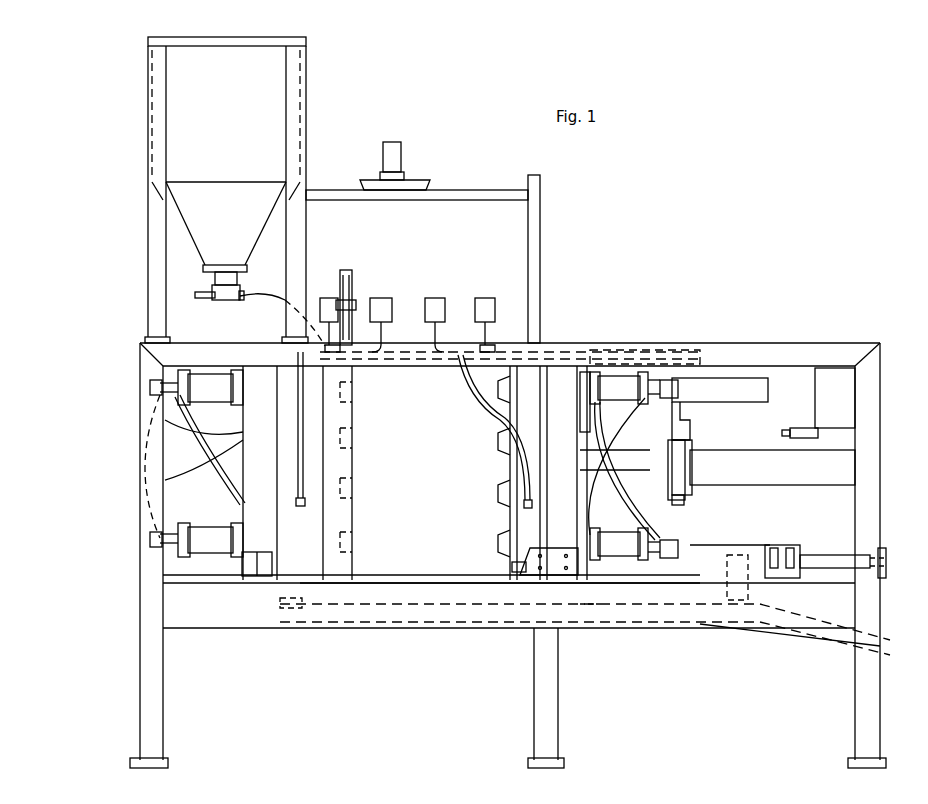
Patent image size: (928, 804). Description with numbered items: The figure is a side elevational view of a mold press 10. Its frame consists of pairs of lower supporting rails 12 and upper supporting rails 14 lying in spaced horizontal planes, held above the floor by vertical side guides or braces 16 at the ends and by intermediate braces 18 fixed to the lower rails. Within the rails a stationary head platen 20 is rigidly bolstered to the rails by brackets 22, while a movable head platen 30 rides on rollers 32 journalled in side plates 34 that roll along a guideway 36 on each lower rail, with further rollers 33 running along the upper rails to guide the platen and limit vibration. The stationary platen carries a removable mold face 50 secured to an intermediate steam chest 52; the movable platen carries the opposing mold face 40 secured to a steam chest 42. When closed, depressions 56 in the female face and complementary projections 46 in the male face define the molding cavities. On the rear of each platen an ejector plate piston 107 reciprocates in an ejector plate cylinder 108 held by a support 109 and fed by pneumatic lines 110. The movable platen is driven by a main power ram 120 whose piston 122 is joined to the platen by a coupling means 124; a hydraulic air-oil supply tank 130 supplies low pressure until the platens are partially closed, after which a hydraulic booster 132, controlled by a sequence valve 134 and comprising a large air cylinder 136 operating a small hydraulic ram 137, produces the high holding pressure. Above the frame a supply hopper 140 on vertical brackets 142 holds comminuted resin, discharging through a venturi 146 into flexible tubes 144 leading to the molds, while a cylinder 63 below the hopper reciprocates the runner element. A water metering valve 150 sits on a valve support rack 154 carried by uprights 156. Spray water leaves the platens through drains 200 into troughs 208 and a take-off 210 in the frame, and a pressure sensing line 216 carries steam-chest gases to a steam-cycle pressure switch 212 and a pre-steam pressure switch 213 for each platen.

The mold press 10 is at (752, 182).
The lower horizontally-extending supporting rails 12 is at (242, 611).
The upper horizontally-extending supporting rails 14 is at (783, 355).
The side guides or braces 16 is at (140, 497).
The intermediate braces 18 is at (534, 702).
The stationary head platen 20 is at (267, 440).
The brackets 22 is at (260, 552).
The movable head platen 30 is at (568, 443).
The rollers 32 is at (514, 566).
The rollers 33 is at (590, 352).
The side plates 34 is at (560, 550).
The guideway 36 is at (380, 575).
The mold face or die component 40 is at (510, 500).
The steam chest 42 is at (538, 393).
The projections 46 is at (498, 445).
The mold face or die component 50 is at (352, 423).
The steam chest 52 is at (302, 541).
The depressions 56 is at (352, 510).
The cylinder 63 is at (352, 270).
The ejector plate piston 107 is at (640, 372).
The ejector plate cylinder 108 is at (150, 387).
The support 109 is at (213, 374).
The pneumatic lines 110 is at (190, 455).
The main power ram 120 is at (755, 475).
The piston 122 is at (678, 505).
The coupling means 124 is at (615, 421).
The hydraulic air-oil supply tank 130 is at (850, 407).
The hydraulic booster 132 is at (782, 548).
The sequence valve 134 is at (690, 418).
The air cylinder 136 is at (737, 555).
The hydraulic ram 137 is at (832, 555).
The supply hopper 140 is at (240, 111).
The vertical brackets 142 is at (150, 208).
The flexible tubes 144 is at (265, 300).
The venturi 146 is at (213, 298).
The valve 150 is at (401, 156).
The valve support rack 154 is at (484, 190).
The uprights 156 is at (540, 273).
The drains 200 is at (520, 600).
The troughs 208 is at (440, 625).
The take-off 210 is at (832, 641).
The pressure switch 212 is at (435, 298).
The pressure switch 213 is at (330, 298).
The pressure sensing line 216 is at (298, 392).